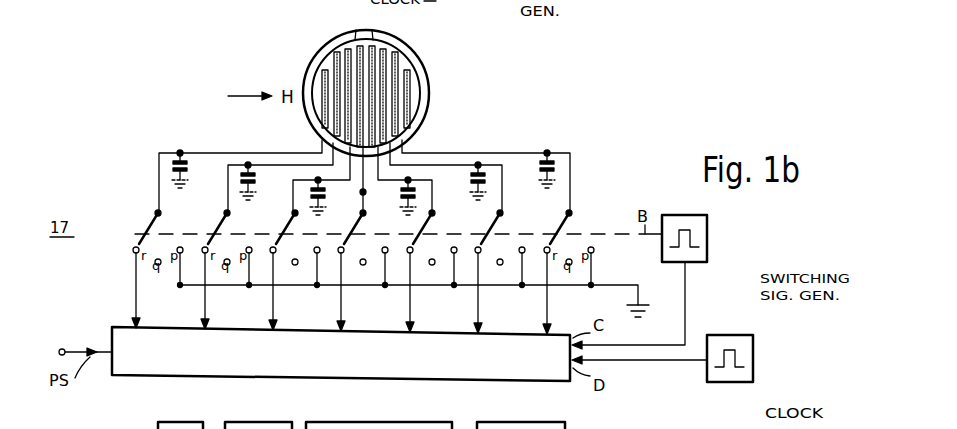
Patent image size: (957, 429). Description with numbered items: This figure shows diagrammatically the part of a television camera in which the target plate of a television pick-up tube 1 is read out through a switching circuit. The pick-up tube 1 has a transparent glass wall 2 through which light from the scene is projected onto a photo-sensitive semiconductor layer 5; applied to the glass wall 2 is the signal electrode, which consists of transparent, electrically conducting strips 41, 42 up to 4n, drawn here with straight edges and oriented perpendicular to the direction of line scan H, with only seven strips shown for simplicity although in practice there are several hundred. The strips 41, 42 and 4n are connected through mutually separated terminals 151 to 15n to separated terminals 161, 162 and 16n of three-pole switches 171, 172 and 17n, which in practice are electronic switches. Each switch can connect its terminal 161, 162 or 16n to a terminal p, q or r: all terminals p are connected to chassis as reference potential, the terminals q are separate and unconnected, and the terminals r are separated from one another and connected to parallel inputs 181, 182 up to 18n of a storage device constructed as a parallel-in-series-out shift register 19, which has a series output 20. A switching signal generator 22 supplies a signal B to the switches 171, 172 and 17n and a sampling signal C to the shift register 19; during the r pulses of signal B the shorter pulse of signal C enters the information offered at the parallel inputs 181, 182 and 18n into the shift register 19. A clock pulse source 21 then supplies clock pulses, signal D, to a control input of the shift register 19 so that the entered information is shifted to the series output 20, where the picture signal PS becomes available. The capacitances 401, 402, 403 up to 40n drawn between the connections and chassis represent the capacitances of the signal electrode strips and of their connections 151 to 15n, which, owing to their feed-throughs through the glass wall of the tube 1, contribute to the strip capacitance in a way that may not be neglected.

The television pick-up tube 1 is at (415, 67).
The transparent glass wall 2 is at (428, 96).
The signal electrode strip 41 is at (323, 66).
The signal electrode strip 42 is at (336, 58).
The signal electrode strip 4n is at (405, 60).
The photo-sensitive semiconductor layer 5 is at (371, 39).
The terminal 151 is at (218, 153).
The terminal 15n is at (481, 153).
The switch terminal 161 is at (156, 212).
The switch terminal 162 is at (225, 212).
The switch terminal 16n is at (571, 213).
The three-pole switch 171 is at (147, 229).
The three-pole switch 172 is at (215, 229).
The three-pole switch 17n is at (560, 230).
The parallel input 181 is at (131, 326).
The parallel input 182 is at (200, 327).
The parallel input 18n is at (542, 330).
The shift register 19 is at (165, 394).
The series output 20 is at (62, 349).
The clock pulse source 21 is at (762, 412).
The switching signal generator 22 is at (760, 276).
The capacitance 401 is at (176, 152).
The capacitance 402 is at (257, 164).
The capacitance 403 is at (375, 192).
The capacitance 40n is at (546, 166).